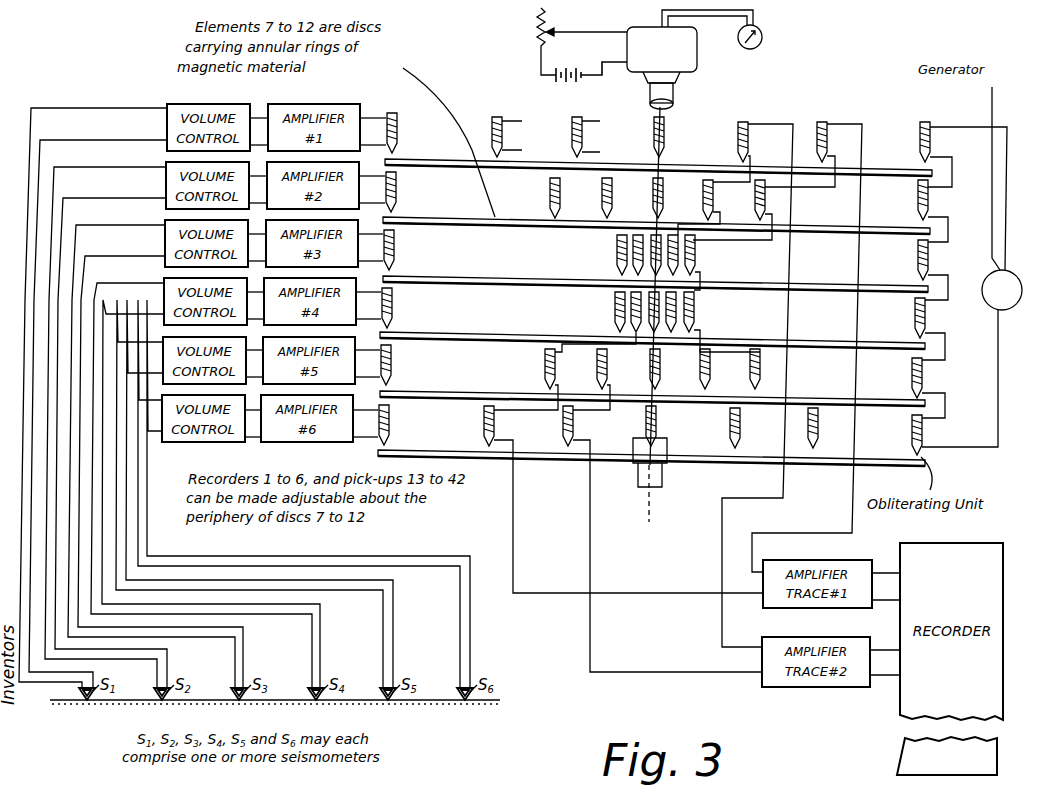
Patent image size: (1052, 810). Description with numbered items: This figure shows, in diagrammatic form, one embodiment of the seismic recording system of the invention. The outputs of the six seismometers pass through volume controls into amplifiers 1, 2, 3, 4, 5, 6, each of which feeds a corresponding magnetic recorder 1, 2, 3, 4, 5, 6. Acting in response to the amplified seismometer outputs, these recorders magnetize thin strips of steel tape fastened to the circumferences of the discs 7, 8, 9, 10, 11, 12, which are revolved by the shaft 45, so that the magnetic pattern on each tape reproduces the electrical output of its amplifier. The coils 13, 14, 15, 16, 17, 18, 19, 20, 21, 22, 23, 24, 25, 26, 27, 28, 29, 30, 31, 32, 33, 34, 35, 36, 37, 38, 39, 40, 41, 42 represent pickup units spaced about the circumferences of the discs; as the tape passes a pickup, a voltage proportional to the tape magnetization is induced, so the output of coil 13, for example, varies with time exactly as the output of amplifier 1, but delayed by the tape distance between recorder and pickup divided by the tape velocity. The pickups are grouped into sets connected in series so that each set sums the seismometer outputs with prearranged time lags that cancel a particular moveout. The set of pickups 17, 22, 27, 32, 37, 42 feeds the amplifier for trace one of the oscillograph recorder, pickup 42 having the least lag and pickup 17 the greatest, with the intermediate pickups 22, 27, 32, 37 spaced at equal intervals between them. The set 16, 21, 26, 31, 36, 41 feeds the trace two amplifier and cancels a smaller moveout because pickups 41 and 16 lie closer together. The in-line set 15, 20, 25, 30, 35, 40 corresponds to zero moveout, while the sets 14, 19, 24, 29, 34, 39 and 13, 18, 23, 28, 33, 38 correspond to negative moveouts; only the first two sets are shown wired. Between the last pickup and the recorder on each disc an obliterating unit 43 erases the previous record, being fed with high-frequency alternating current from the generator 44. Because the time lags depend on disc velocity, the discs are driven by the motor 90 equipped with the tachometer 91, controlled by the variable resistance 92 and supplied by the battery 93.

The amplifier / magnetic recorder 1 is at (400, 127).
The amplifier / magnetic recorder 2 is at (398, 190).
The amplifier / magnetic recorder 3 is at (396, 248).
The amplifier / magnetic recorder 4 is at (394, 302).
The amplifier / magnetic recorder 5 is at (393, 360).
The amplifier / magnetic recorder 6 is at (391, 418).
The disc 7 is at (430, 160).
The disc 8 is at (437, 218).
The disc 9 is at (442, 277).
The disc 10 is at (434, 334).
The disc 11 is at (432, 393).
The disc 12 is at (428, 450).
The pickup coil 13 is at (503, 108).
The pickup coil 14 is at (580, 108).
The pickup coil 15 is at (654, 120).
The pickup coil 16 is at (747, 122).
The pickup coil 17 is at (826, 122).
The pickup coil 18 is at (550, 183).
The pickup coil 19 is at (602, 185).
The pickup coil 20 is at (653, 185).
The pickup coil 21 is at (708, 178).
The pickup coil 22 is at (766, 200).
The pickup coil 23 is at (617, 250).
The pickup coil 24 is at (638, 235).
The pickup coil 25 is at (658, 235).
The pickup coil 26 is at (673, 235).
The pickup coil 27 is at (696, 255).
The pickup coil 28 is at (695, 305).
The pickup coil 29 is at (671, 334).
The pickup coil 30 is at (656, 336).
The pickup coil 31 is at (636, 336).
The pickup coil 32 is at (615, 306).
The pickup coil 33 is at (762, 373).
The pickup coil 34 is at (711, 372).
The pickup coil 35 is at (660, 392).
The pickup coil 36 is at (607, 380).
The pickup coil 37 is at (545, 368).
The pickup coil 38 is at (819, 432).
The pickup coil 39 is at (741, 432).
The pickup coil 40 is at (658, 430).
The pickup coil 41 is at (574, 427).
The pickup coil 42 is at (495, 426).
The obliterating unit 43 is at (929, 122).
The generator 44 is at (1005, 277).
The shaft 45 is at (672, 105).
The motor 90 is at (640, 33).
The tachometer 91 is at (763, 37).
The variable resistance 92 is at (538, 28).
The battery 93 is at (566, 68).